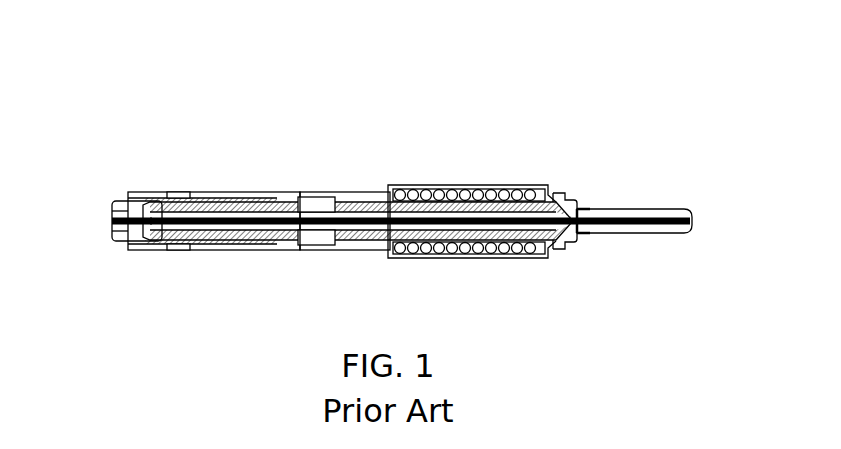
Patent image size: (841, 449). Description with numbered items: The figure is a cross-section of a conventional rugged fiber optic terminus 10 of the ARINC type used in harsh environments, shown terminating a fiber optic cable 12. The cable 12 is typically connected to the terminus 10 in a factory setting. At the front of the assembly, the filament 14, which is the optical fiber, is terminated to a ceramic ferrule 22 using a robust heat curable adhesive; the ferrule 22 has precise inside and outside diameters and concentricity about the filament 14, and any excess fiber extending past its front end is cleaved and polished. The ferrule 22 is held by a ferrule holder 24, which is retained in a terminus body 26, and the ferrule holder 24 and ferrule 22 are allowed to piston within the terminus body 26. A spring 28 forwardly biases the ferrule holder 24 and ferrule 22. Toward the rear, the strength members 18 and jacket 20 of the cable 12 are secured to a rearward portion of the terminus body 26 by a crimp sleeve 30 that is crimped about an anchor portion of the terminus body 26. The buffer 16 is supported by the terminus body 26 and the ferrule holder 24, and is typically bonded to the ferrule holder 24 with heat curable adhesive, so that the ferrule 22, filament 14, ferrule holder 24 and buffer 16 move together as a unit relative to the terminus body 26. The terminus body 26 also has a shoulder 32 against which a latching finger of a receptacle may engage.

The terminus 10 is at (264, 136).
The cable 12 is at (115, 225).
The filament 14 is at (605, 226).
The buffer 16 is at (318, 226).
The strength members 18 is at (207, 202).
The jacket 20 is at (125, 206).
The ferrule 22 is at (642, 212).
The ferrule holder 24 is at (568, 191).
The terminus body 26 is at (453, 187).
The spring 28 is at (500, 187).
The crimp sleeve 30 is at (238, 193).
The shoulder 32 is at (383, 191).